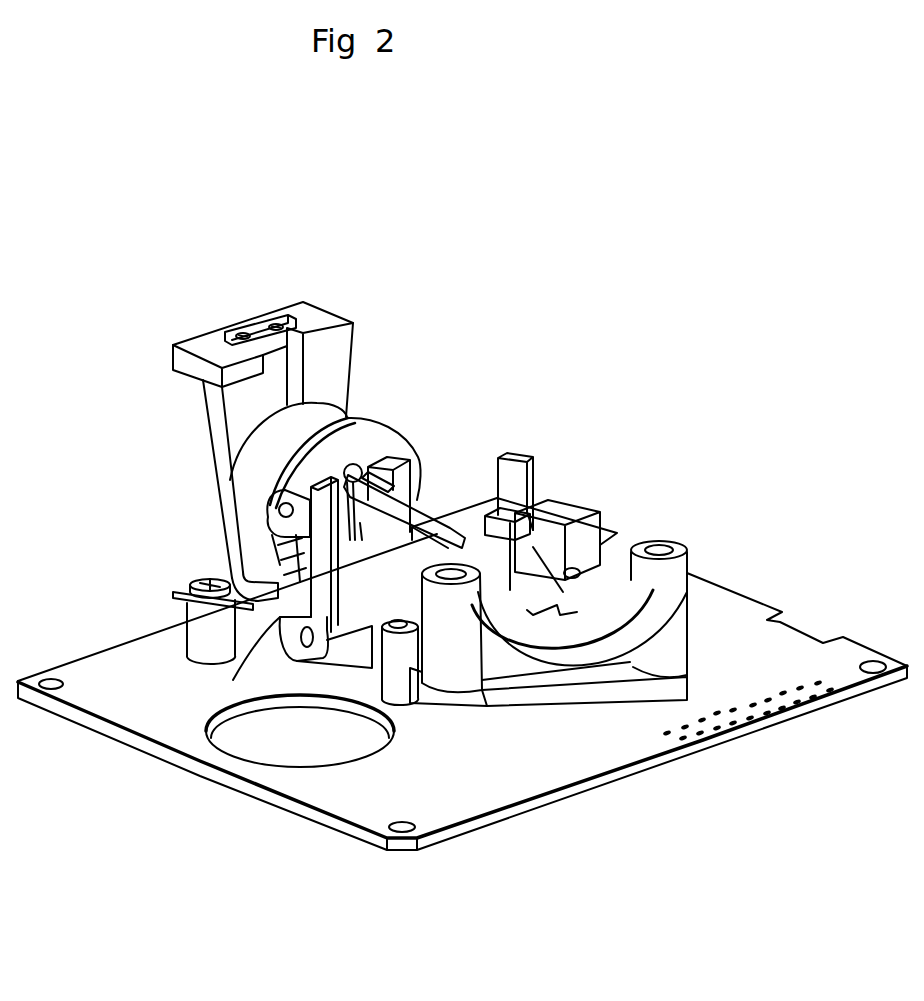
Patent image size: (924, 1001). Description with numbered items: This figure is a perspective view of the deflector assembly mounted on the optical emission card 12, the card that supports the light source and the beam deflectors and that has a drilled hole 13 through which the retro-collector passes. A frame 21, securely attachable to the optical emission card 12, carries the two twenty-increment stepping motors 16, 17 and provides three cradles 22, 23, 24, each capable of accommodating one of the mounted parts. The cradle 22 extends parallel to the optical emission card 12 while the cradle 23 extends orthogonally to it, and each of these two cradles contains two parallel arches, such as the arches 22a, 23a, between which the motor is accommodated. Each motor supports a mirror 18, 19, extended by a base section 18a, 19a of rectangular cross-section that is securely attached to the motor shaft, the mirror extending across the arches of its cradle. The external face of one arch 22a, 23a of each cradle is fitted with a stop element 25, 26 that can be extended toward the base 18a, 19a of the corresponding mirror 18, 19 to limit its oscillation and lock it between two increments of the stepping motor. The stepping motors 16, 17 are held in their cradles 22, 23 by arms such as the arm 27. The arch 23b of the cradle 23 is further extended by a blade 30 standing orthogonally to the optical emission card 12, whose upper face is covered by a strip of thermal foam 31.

The optical emission card 12 is at (873, 652).
The drilled hole 13 is at (260, 747).
The stepping motor 16 is at (580, 540).
The stepping motor 17 is at (373, 440).
The mirror 18 is at (523, 490).
The base section 18a is at (533, 517).
The mirror 19 is at (422, 490).
The base section 19a is at (345, 472).
The frame 21 is at (468, 510).
The cradle 22 is at (557, 516).
The arch 22a is at (560, 550).
The cradle 23 is at (220, 548).
The arch 23a is at (318, 575).
The arch 23b is at (222, 546).
The cradle 24 is at (673, 613).
The stop element 25 is at (505, 522).
The stop element 26 is at (360, 523).
The arm 27 is at (258, 450).
The blade 30 is at (200, 343).
The strip of thermal foam 31 is at (253, 313).